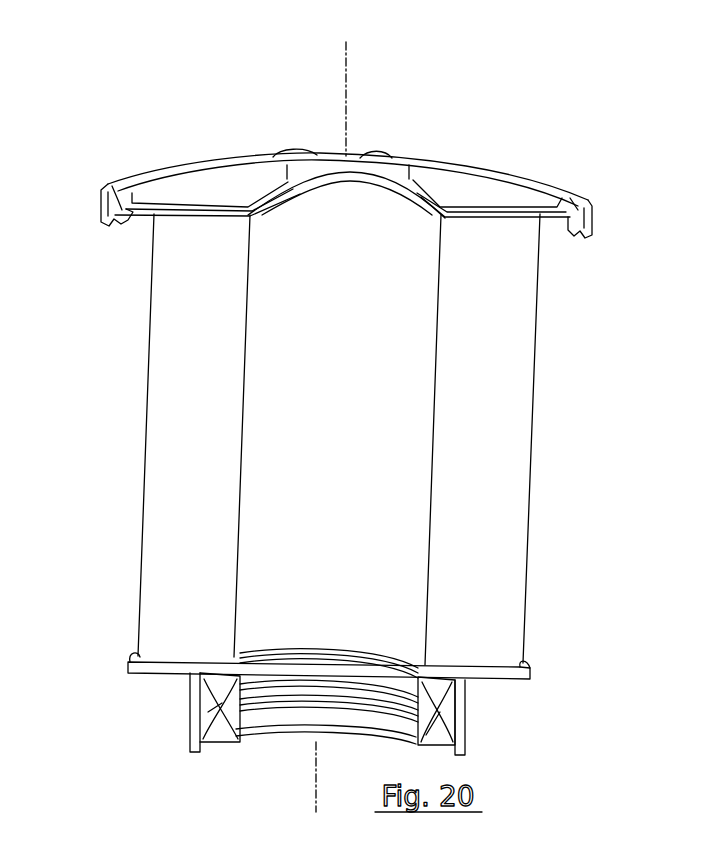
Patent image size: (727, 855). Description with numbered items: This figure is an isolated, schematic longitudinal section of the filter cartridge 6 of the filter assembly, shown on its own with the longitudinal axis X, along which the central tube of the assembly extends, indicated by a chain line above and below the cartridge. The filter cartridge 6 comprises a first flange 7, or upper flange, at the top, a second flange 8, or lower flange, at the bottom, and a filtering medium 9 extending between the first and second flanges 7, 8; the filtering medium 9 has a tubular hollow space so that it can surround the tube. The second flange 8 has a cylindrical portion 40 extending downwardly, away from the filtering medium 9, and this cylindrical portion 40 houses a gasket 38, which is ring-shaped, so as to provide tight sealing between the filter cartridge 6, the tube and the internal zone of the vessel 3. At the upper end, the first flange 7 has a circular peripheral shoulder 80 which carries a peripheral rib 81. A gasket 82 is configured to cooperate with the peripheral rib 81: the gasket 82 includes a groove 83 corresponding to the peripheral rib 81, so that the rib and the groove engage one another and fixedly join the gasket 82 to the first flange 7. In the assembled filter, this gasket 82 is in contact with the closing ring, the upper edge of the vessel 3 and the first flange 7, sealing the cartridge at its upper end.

The vessel 3 is at (4, 120).
The filter cartridge 6 is at (331, 408).
The first flange 7 is at (217, 190).
The second flange 8 is at (128, 666).
The filtering medium 9 is at (500, 526).
The gasket 38 is at (195, 713).
The cylindrical portion 40 is at (192, 727).
The circular peripheral shoulder 80 is at (123, 183).
The peripheral rib 81 is at (103, 211).
The gasket 82 is at (597, 204).
The groove 83 is at (583, 202).
The longitudinal axis X is at (347, 45).